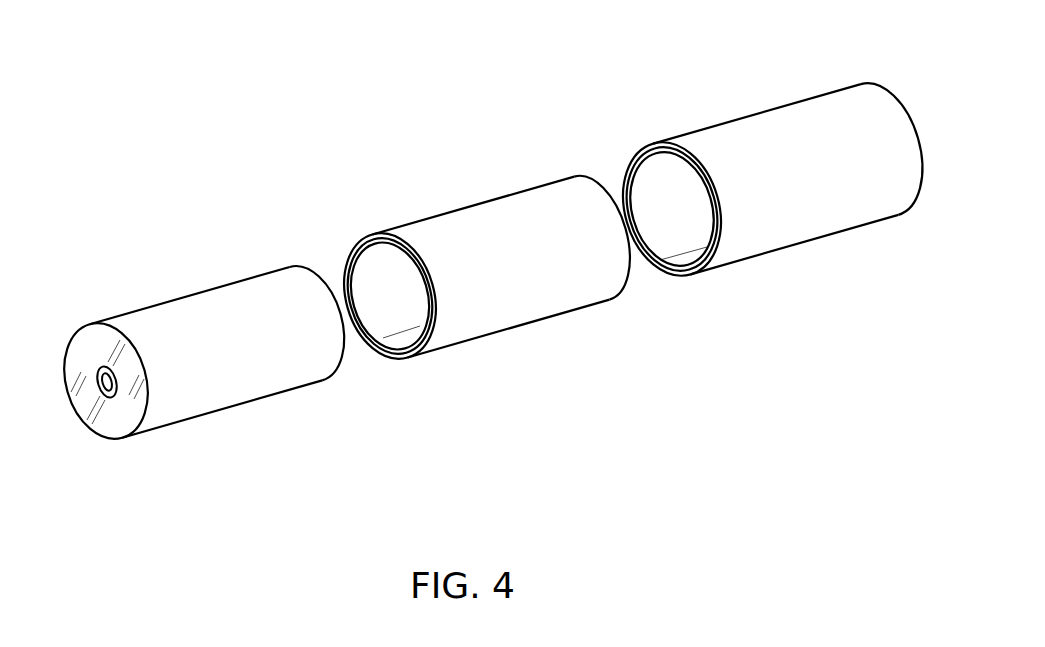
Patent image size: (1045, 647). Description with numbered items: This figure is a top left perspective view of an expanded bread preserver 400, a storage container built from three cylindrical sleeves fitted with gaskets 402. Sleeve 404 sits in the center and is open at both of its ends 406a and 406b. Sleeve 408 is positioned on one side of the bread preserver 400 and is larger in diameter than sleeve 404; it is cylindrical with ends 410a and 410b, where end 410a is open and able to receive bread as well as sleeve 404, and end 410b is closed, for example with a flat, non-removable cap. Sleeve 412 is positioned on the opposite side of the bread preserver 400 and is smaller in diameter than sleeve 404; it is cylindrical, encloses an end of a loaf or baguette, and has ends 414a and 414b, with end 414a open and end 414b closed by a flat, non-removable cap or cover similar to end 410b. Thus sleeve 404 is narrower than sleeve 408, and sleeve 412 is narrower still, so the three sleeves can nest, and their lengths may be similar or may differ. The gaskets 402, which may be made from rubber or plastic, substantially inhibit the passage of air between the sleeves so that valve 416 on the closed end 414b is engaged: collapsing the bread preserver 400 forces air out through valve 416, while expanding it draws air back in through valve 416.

The bread preserver 400 is at (846, 257).
The gaskets 402 is at (398, 352).
The sleeve 404 is at (503, 332).
The end 406a is at (355, 243).
The end 406b is at (597, 180).
The sleeve 408 is at (750, 110).
The end 410a is at (718, 265).
The end 410b is at (880, 85).
The sleeve 412 is at (190, 293).
The end 414a is at (333, 370).
The end 414b is at (85, 327).
The valve 416 is at (107, 398).